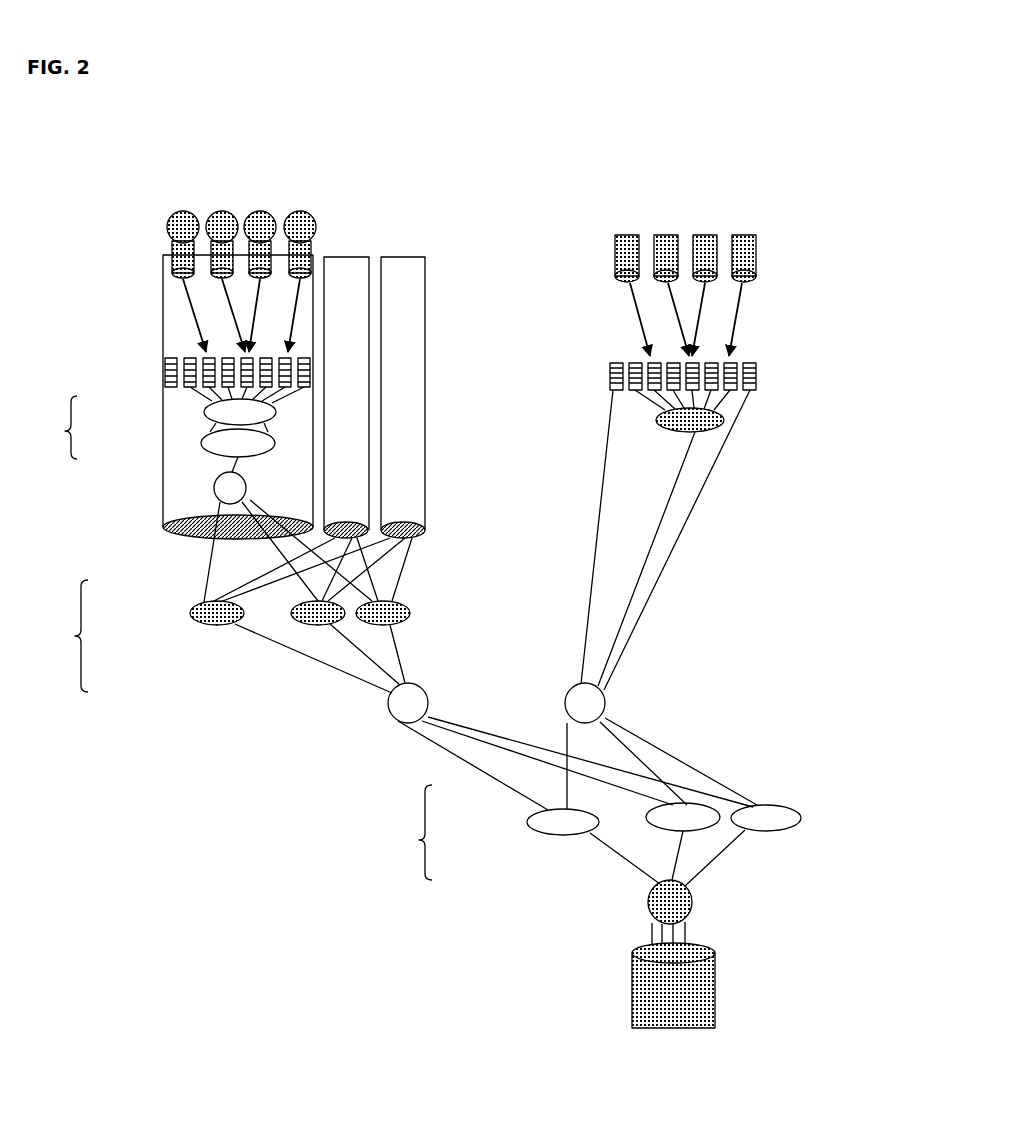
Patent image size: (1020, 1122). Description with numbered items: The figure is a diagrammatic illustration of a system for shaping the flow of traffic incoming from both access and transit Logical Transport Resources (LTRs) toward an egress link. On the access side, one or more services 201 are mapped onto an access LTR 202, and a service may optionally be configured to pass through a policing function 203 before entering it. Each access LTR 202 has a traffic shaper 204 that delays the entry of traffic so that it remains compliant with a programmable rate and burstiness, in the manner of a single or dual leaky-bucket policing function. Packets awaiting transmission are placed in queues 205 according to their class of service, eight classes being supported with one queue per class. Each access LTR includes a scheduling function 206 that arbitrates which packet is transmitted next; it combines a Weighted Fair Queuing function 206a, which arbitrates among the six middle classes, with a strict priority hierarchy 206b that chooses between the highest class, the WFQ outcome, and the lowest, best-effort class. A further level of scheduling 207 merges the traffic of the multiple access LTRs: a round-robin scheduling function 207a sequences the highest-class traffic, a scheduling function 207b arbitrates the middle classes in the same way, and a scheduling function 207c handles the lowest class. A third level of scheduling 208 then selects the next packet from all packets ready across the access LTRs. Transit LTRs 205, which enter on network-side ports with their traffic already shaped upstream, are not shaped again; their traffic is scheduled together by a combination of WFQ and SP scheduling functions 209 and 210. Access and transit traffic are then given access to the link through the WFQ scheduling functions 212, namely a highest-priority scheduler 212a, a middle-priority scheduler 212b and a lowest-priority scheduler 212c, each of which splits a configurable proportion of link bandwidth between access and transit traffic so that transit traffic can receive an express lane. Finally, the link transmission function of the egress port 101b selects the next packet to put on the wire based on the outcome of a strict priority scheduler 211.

The egress port 101b is at (632, 992).
The services 201 is at (203, 204).
The access LTR 202 is at (162, 305).
The policing function 203 is at (181, 212).
The traffic shaper 204 is at (216, 493).
The queues 205 is at (165, 375).
The scheduling function 206 is at (153, 427).
The Weighted Fair Queuing function 206a is at (206, 410).
The strict priority scheduling hierarchy 206b is at (203, 443).
The second level of scheduling 207 is at (265, 636).
The round-robin scheduling function 207a is at (207, 626).
The scheduling function 207b is at (300, 626).
The scheduling function 207c is at (398, 626).
The third level of scheduling 208 is at (388, 707).
The WFQ scheduling function 209 is at (720, 423).
The SP scheduling function 210 is at (607, 705).
The strict priority scheduler 211 is at (647, 908).
The WFQ scheduling functions 212 is at (622, 843).
The WFQ scheduling function for highest priority traffic 212a is at (547, 837).
The WFQ scheduling function for middle priority traffic 212b is at (652, 830).
The WFQ scheduling function for lowest priority traffic 212c is at (785, 832).